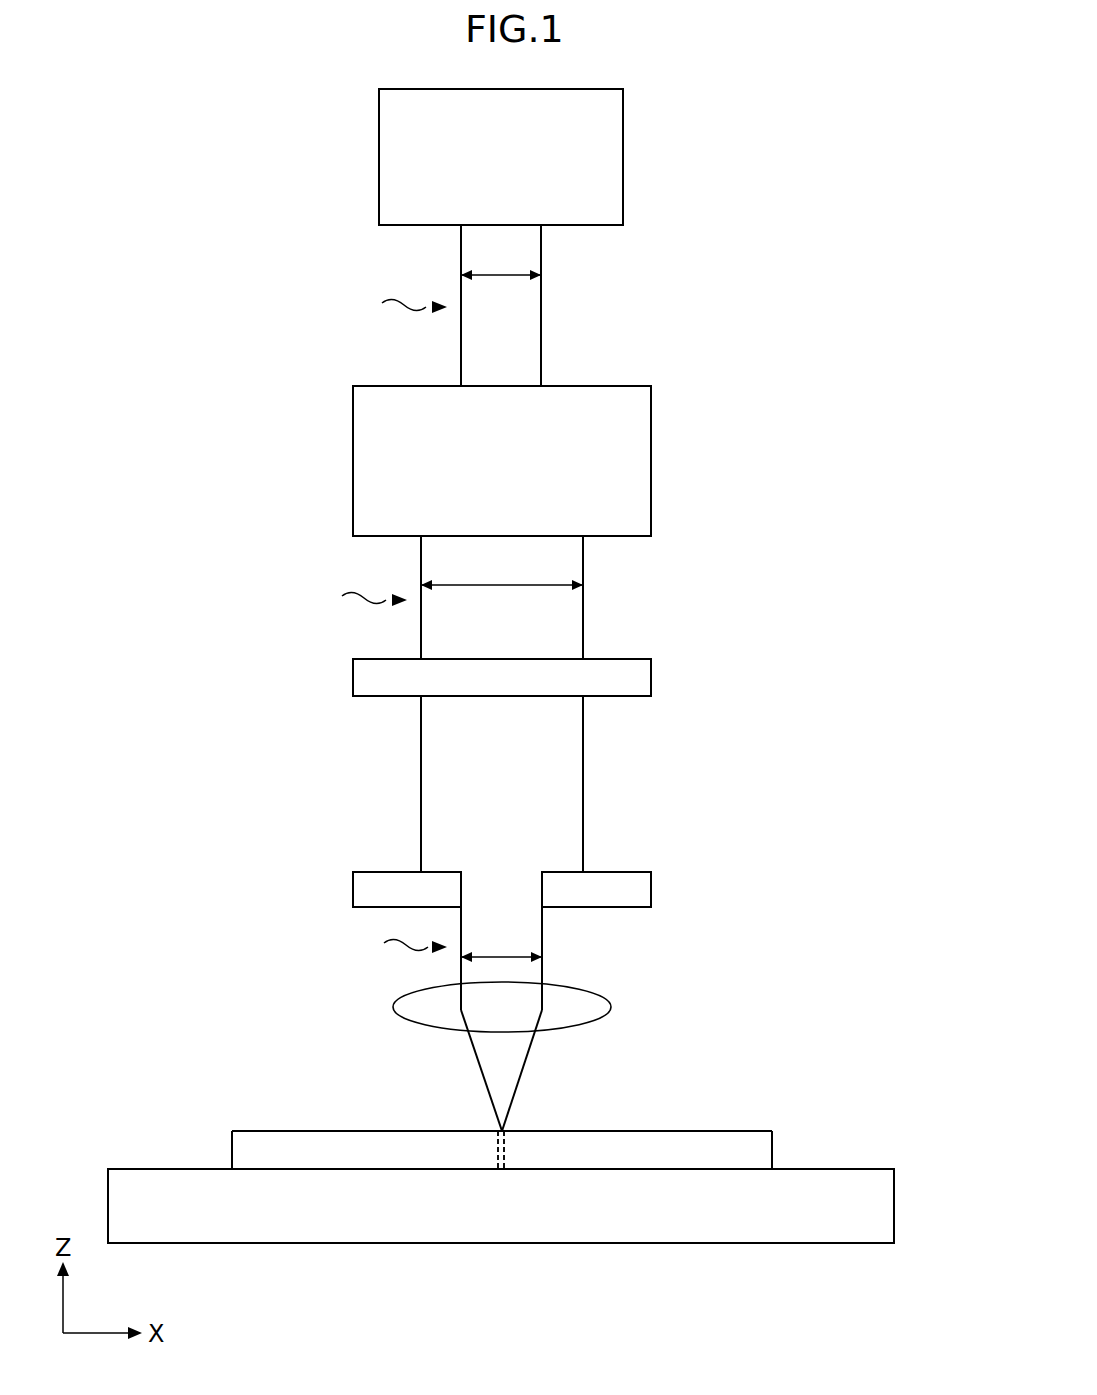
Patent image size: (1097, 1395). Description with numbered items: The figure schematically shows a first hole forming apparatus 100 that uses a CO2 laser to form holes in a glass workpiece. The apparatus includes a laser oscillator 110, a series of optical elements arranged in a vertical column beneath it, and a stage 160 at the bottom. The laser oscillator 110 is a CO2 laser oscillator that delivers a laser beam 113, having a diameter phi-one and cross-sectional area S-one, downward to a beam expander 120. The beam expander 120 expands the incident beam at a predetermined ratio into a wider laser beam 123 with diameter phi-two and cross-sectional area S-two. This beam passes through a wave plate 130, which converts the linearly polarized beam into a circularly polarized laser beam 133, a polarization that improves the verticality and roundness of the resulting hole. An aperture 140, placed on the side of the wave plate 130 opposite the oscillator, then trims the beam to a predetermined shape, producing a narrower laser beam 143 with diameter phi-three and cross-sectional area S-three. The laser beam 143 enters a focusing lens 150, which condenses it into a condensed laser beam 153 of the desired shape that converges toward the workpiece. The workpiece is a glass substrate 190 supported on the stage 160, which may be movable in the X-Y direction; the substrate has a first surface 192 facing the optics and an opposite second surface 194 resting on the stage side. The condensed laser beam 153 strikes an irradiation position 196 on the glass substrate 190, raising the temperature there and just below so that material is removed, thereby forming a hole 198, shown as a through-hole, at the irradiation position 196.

The first hole forming apparatus 100 is at (776, 122).
The laser oscillator 110 is at (623, 157).
The laser beam 113 is at (541, 307).
The beam expander 120 is at (651, 460).
The laser beam 123 is at (583, 600).
The wave plate 130 is at (651, 677).
The laser beam 133 is at (583, 783).
The aperture 140 is at (651, 890).
The laser beam 143 is at (542, 947).
The focusing lens 150 is at (611, 1007).
The condensed laser beam 153 is at (524, 1073).
The stage 160 is at (894, 1207).
The glass substrate 190 is at (533, 1115).
The first surface 192 is at (241, 1122).
The second surface 194 is at (275, 1176).
The irradiation position 196 is at (480, 1120).
The hole 198 is at (488, 1147).